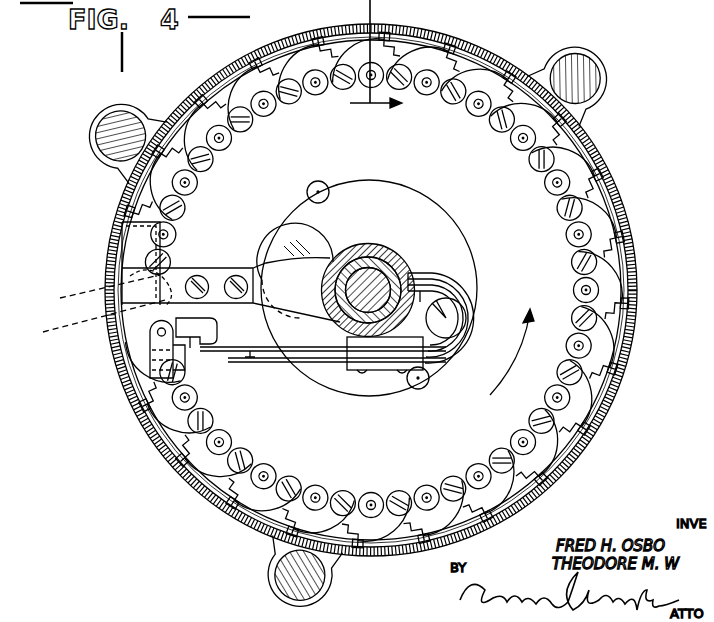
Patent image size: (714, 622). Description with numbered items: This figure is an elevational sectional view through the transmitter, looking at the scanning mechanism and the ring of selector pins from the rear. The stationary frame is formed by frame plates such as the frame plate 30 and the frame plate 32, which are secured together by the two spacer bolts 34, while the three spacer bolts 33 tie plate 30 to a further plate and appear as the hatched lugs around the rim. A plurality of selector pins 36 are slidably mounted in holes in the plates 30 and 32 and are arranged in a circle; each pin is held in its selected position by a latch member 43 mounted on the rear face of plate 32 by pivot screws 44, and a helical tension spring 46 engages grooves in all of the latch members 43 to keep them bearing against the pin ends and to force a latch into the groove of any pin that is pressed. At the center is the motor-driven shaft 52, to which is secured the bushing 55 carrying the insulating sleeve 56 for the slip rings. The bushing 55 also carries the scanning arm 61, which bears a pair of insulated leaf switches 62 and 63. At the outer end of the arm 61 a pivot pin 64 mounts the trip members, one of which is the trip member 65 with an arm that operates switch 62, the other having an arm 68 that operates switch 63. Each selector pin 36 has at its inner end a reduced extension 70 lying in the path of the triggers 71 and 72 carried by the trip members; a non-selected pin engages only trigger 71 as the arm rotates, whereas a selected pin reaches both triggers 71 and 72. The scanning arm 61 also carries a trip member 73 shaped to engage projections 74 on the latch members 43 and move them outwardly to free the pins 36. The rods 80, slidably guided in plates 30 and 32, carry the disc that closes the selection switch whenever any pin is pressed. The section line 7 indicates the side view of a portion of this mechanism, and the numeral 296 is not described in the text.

The section line 7- 7 is at (362, 58).
The frame plate 30 is at (606, 93).
The frame plate 32 is at (590, 441).
The spacer bolts 33 is at (128, 114).
The spacer bolts 34 is at (297, 242).
The selector pins 36 is at (602, 386).
The latch member 43 is at (614, 327).
The pivot screws 44 is at (503, 128).
The helical tension spring 46 is at (600, 151).
The shaft 52 is at (396, 246).
The bushing 55 is at (374, 237).
The insulating sleeve 56 is at (339, 243).
The scanning arm 61 is at (264, 272).
The leaf switch 62 is at (322, 364).
The leaf switch 63 is at (272, 362).
The pivot pin 64 is at (158, 336).
The trip member 65 is at (150, 358).
The arm 68 is at (200, 346).
The reduced extension 70 is at (428, 96).
The trigger 71 is at (101, 314).
The trigger 72 is at (97, 292).
The trip member 73 is at (130, 240).
The projections 74 is at (604, 242).
The rods 80 is at (320, 181).
The element 296 is at (527, 13).